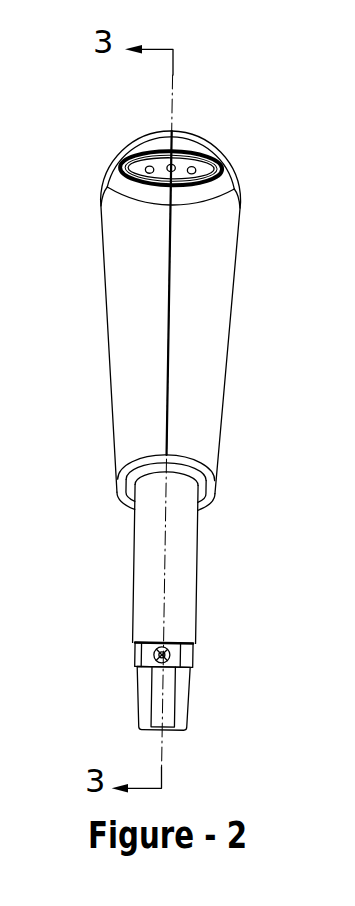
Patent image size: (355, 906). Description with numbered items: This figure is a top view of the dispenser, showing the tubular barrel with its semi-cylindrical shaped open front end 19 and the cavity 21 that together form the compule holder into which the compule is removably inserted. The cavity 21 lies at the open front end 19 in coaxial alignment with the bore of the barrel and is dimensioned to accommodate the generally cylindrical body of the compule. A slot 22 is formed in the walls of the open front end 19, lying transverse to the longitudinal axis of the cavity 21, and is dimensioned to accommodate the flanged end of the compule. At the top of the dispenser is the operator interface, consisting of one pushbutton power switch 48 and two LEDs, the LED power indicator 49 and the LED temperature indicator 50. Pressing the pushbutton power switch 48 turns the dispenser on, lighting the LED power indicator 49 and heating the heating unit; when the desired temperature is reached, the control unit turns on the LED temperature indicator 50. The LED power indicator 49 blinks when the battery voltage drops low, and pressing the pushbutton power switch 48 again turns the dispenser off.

The open front end 19 is at (168, 735).
The cavity 21 is at (165, 695).
The slot 22 is at (183, 645).
The pushbutton power switch 48 is at (180, 150).
The LED power indicator 49 is at (205, 154).
The LED temperature indicator 50 is at (140, 153).